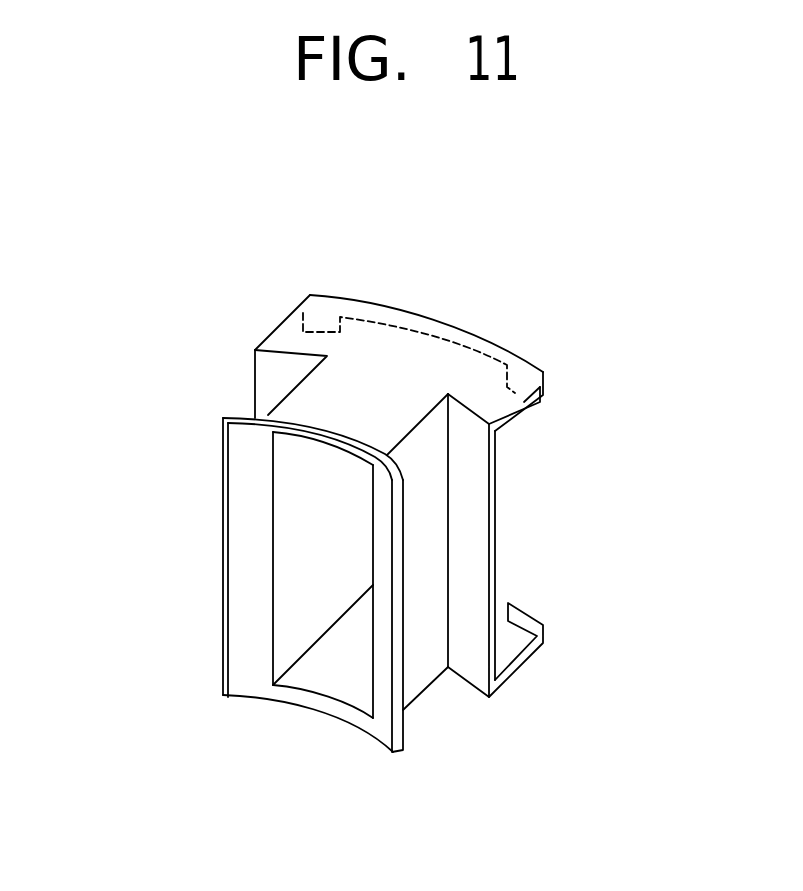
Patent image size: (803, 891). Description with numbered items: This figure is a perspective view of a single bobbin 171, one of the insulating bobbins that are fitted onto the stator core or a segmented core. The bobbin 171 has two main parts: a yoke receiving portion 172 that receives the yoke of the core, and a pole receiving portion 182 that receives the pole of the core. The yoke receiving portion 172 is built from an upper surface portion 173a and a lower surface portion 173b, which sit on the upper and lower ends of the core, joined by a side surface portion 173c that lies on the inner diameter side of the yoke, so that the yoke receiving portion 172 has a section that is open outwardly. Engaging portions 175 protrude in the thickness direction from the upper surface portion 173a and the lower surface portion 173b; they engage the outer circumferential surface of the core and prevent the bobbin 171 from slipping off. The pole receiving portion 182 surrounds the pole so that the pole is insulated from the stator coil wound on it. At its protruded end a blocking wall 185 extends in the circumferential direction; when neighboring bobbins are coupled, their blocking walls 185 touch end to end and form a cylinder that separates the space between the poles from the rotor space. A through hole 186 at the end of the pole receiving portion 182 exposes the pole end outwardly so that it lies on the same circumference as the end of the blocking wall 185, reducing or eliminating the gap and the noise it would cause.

The bobbin 171 is at (145, 377).
The yoke receiving portion 172 is at (724, 348).
The upper surface portion 173a is at (470, 378).
The lower surface portion 173b is at (526, 655).
The side surface portion 173c is at (473, 492).
The engaging portion 175 is at (310, 323).
The pole receiving portion 182 is at (418, 650).
The blocking wall 185 is at (247, 667).
The through hole 186 is at (347, 694).